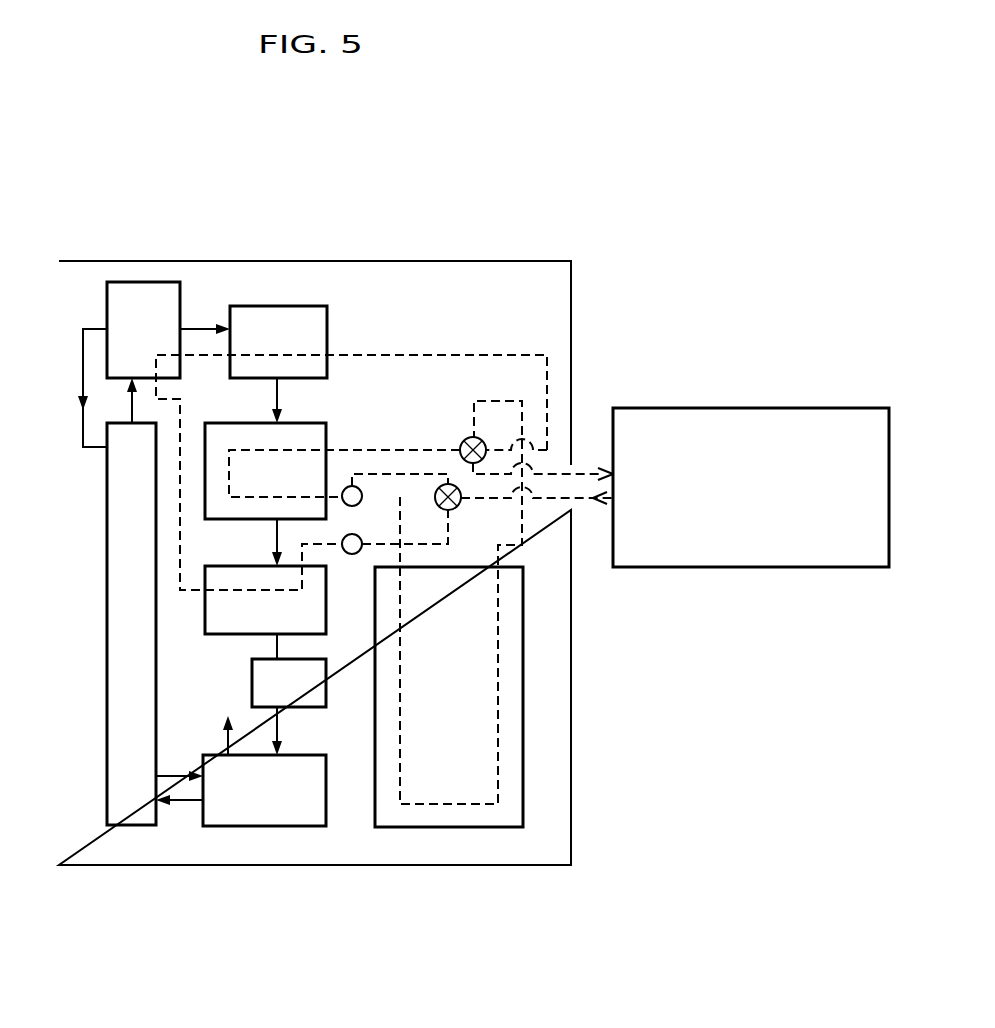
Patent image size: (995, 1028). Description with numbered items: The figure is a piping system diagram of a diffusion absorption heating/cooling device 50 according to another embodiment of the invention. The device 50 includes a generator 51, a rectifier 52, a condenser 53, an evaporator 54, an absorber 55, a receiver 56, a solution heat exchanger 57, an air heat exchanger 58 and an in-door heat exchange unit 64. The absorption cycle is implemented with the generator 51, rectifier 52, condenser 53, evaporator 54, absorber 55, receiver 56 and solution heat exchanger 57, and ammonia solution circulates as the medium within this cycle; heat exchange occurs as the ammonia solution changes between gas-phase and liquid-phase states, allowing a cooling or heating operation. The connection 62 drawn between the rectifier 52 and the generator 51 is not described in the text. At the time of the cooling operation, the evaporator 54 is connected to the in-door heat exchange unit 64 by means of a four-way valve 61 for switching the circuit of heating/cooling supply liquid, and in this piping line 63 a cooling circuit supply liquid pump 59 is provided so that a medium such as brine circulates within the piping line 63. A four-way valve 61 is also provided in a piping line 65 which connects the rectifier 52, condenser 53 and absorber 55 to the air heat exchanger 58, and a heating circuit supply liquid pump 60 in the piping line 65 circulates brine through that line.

The diffusion absorption heating/cooling device 50 is at (583, 270).
The generator 51 is at (128, 613).
The rectifier 52 is at (130, 304).
The condenser 53 is at (305, 320).
The evaporator 54 is at (305, 428).
The absorber 55 is at (313, 617).
The receiver 56 is at (310, 697).
The solution heat exchanger 57 is at (313, 790).
The air heat exchanger 58 is at (477, 702).
The cooling circuit supply liquid pump 59 is at (358, 510).
The heating circuit supply liquid pump 60 is at (352, 556).
The four-way valve 61 is at (465, 440).
The line 62 is at (83, 366).
The piping line 63 is at (435, 353).
The in-door heat exchange unit 64 is at (737, 555).
The piping line 65 is at (376, 448).